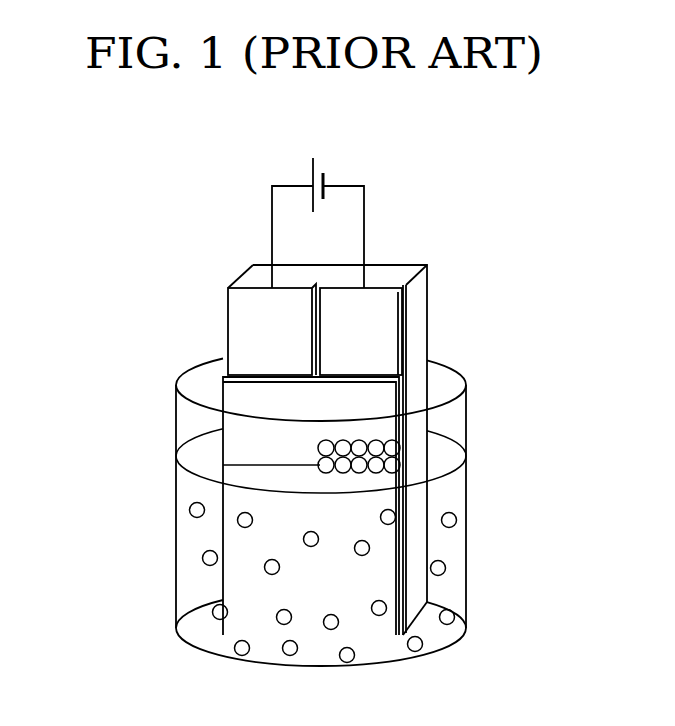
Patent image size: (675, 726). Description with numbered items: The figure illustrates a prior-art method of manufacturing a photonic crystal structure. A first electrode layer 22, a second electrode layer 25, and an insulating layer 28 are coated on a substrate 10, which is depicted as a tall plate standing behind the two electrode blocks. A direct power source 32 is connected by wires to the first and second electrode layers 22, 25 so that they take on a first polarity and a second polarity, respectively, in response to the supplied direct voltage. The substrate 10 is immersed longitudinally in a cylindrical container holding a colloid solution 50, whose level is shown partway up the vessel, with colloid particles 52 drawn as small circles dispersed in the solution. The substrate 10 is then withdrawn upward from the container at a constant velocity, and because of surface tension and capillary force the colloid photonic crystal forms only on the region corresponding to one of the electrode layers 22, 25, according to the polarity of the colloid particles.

The substrate 10 is at (420, 282).
The first electrode layer 22 is at (233, 318).
The second electrode layer 25 is at (405, 322).
The insulating layer 28 is at (403, 400).
The direct power source 32 is at (341, 163).
The colloid solution 50 is at (453, 565).
The gas bubbles 52 is at (457, 522).